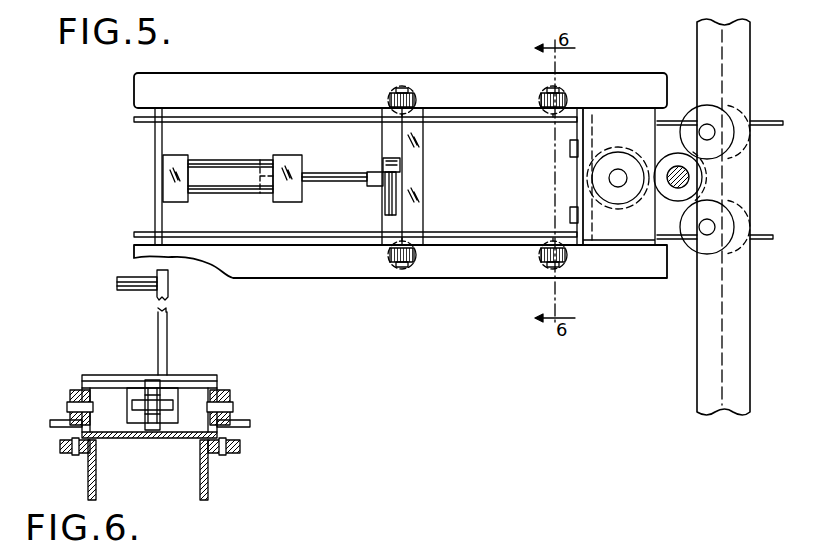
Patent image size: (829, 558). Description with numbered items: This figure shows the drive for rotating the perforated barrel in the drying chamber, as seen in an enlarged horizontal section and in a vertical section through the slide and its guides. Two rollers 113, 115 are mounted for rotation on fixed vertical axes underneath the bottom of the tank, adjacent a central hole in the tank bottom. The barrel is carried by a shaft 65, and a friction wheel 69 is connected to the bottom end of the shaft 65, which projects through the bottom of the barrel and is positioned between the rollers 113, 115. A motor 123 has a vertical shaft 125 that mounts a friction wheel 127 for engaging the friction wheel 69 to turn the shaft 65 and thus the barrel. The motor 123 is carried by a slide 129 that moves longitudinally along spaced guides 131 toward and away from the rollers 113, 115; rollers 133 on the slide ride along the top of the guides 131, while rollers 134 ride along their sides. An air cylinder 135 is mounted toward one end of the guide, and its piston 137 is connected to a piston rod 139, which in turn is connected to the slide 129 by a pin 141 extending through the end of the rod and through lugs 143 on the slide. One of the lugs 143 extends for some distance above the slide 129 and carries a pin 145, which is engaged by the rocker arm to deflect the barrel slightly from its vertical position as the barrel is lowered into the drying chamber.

In FIG. 5, the guides 131 is at (485, 83).
In FIG. 6, the guides 131 is at (56, 422).
In FIG. 5, the rollers 133 is at (390, 100).
In FIG. 6, the rollers 133 is at (82, 391).
In FIG. 5, the rollers 134 is at (407, 117).
In FIG. 6, the rollers 134 is at (62, 447).
In FIG. 5, the slide 129 is at (390, 131).
In FIG. 6, the slide 129 is at (215, 377).
In FIG. 5, the air cylinder 135 is at (222, 163).
In FIG. 5, the piston 137 is at (260, 182).
In FIG. 5, the piston rod 139 is at (318, 176).
In FIG. 5, the pin 141 is at (392, 160).
In FIG. 5, the pin 145 is at (390, 205).
In FIG. 6, the pin 145 is at (118, 283).
In FIG. 6, the lugs 143 is at (168, 298).
In FIG. 5, the motor 123 is at (618, 147).
In FIG. 5, the vertical shaft 125 is at (617, 188).
In FIG. 5, the friction wheel 127 is at (628, 205).
In FIG. 5, the roller 115 is at (730, 112).
In FIG. 5, the roller 113 is at (735, 220).
In FIG. 5, the shaft 65 is at (690, 181).
In FIG. 5, the friction wheel 69 is at (688, 161).